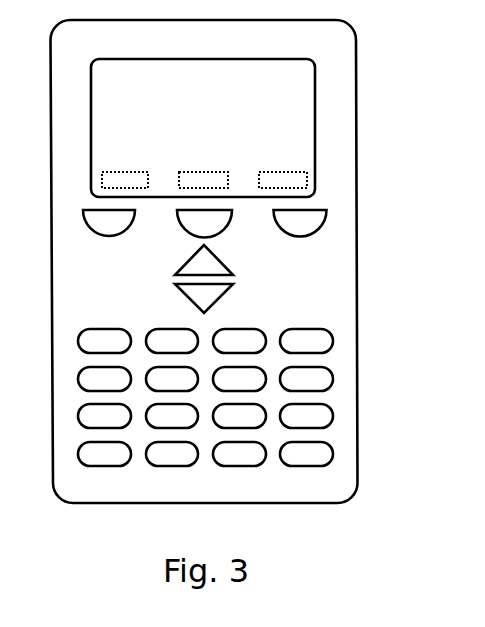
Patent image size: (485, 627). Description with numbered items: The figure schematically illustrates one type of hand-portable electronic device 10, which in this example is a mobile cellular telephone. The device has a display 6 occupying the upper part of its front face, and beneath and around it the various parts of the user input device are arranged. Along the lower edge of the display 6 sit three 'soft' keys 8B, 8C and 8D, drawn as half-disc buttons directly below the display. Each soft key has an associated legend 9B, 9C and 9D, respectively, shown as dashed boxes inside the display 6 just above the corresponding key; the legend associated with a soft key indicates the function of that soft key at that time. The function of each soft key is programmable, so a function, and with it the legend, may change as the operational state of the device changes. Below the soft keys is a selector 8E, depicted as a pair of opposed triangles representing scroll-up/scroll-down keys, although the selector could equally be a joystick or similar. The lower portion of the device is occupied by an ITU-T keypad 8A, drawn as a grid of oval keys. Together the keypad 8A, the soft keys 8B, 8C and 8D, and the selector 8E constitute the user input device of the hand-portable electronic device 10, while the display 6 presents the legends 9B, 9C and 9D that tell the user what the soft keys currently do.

The hand-portable electronic device 10 is at (357, 107).
The display 6 is at (211, 114).
The legend 9B is at (121, 173).
The legend 9C is at (220, 156).
The legend 9D is at (272, 173).
The ITU-T keypad 8A is at (326, 316).
The soft key 8B is at (107, 238).
The soft key 8C is at (182, 233).
The soft key 8D is at (302, 238).
The selector 8E is at (246, 281).